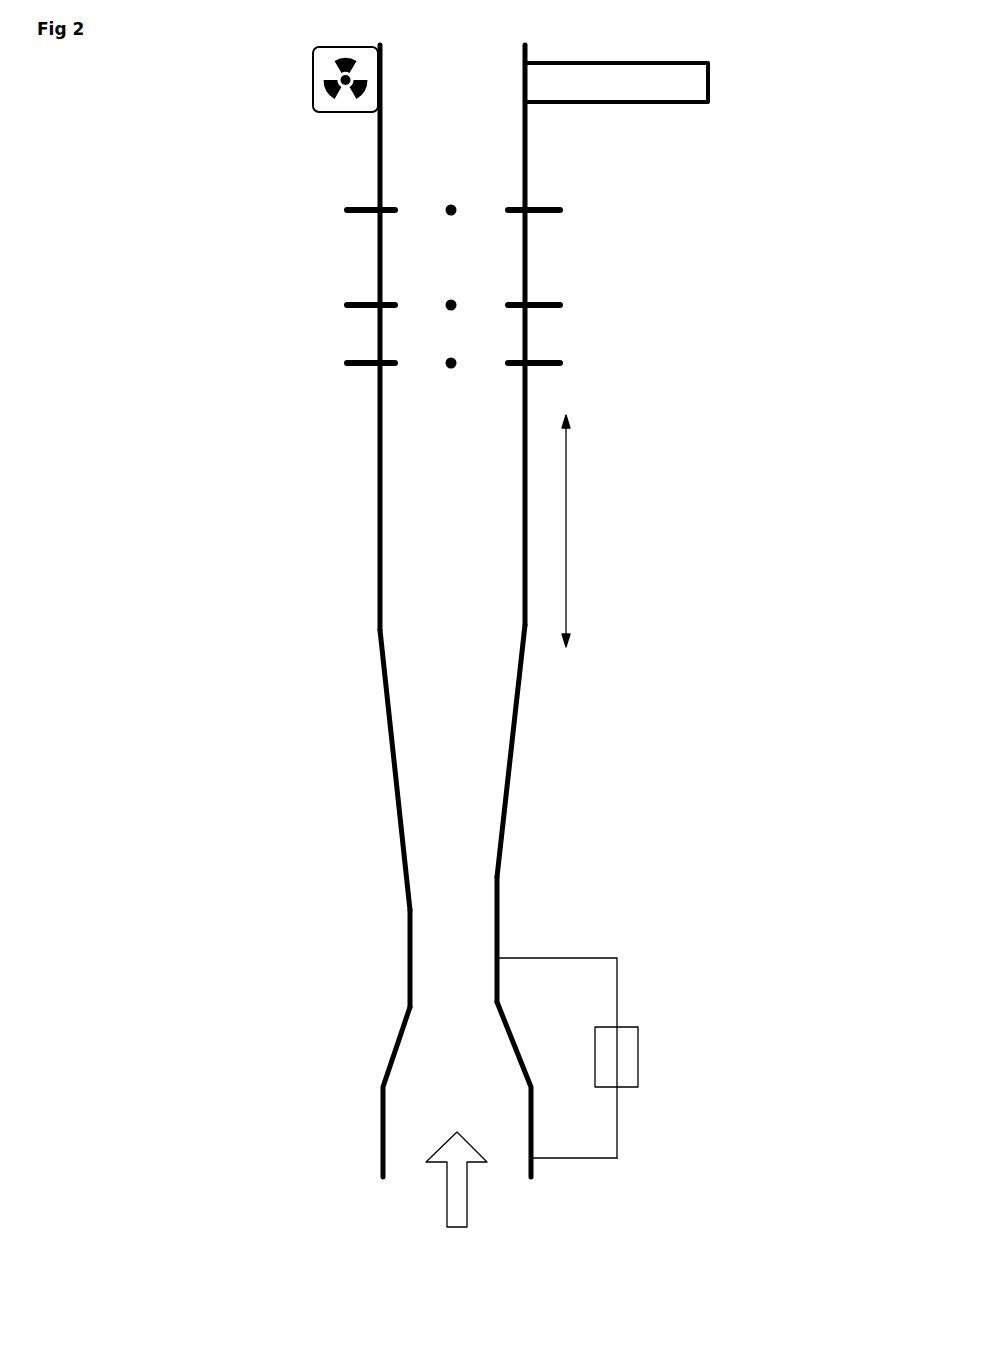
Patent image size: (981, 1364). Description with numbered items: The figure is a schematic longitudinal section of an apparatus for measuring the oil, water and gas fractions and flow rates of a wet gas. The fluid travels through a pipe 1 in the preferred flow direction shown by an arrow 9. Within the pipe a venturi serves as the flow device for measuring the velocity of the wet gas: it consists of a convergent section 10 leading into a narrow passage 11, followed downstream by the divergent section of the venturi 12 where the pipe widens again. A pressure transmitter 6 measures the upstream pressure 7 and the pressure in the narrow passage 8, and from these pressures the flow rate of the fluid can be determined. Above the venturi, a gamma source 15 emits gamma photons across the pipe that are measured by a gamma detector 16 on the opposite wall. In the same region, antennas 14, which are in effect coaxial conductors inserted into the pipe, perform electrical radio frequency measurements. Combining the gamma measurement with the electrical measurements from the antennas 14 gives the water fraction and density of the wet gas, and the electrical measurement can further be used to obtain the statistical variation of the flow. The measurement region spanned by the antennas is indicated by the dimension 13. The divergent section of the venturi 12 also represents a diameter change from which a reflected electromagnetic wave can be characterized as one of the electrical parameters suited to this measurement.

The pipe 1 is at (378, 515).
The pressure transmitter 6 is at (612, 1060).
The upstream pressure 7 is at (560, 1160).
The pressure in the narrow passage 8 is at (522, 958).
The arrow 9 is at (468, 1210).
The convergent section 10 is at (392, 1047).
The narrow passage 11 is at (408, 960).
The divergent section of the venturi 12 is at (390, 752).
The measurement range 13 is at (566, 505).
The antennas 14 is at (395, 213).
The gamma source 15 is at (313, 95).
The gamma detector 16 is at (615, 102).